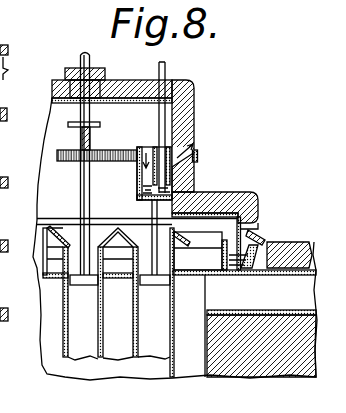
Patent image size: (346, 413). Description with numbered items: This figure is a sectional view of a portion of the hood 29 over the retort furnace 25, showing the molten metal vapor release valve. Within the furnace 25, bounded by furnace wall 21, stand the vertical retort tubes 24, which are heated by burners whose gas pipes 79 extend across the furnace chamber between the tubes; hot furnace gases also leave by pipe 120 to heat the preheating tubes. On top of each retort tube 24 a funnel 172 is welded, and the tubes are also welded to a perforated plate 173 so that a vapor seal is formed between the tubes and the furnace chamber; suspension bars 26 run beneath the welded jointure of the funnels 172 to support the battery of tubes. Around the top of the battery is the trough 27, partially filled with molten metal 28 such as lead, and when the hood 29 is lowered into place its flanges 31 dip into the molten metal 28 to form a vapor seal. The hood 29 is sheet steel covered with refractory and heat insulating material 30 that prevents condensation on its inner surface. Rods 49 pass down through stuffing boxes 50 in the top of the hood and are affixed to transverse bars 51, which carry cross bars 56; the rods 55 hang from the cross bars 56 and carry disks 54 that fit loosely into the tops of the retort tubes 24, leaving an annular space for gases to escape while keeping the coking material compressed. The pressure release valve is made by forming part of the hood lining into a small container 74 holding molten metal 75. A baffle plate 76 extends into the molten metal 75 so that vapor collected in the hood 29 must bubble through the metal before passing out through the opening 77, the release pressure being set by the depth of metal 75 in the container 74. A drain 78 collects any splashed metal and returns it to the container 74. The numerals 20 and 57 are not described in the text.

The supply line 20 is at (3, 45).
The gas pipe 79 is at (12, 74).
The rod 49 is at (80, 55).
The stuffing box 50 is at (105, 75).
The refractory and heat insulating material 30 is at (195, 84).
The hood 29 is at (194, 104).
The transverse member or bar 51 is at (96, 126).
The baffle plate 76 is at (150, 148).
The opening 77 is at (194, 146).
The drain 78 is at (198, 157).
The cross bar 56 is at (92, 168).
The container 74 is at (137, 182).
The suspension bar 26 is at (193, 238).
The flange 31 is at (259, 220).
The check valve 57 is at (260, 233).
The trough 27 is at (252, 257).
The funnel 172 is at (66, 243).
The molten metal 75 is at (137, 210).
The perforated plate 173 is at (56, 276).
The disk 54 is at (84, 286).
The rod 55 is at (171, 274).
The molten metal 28 is at (226, 276).
The pipe 120 is at (268, 301).
The retort furnace 25 is at (118, 302).
The retort tube 24 is at (175, 352).
The furnace wall 21 is at (267, 366).